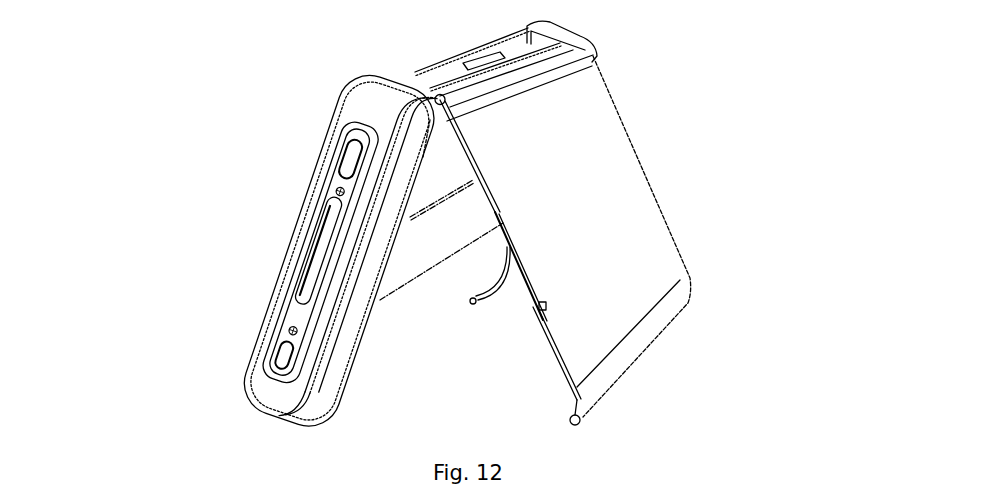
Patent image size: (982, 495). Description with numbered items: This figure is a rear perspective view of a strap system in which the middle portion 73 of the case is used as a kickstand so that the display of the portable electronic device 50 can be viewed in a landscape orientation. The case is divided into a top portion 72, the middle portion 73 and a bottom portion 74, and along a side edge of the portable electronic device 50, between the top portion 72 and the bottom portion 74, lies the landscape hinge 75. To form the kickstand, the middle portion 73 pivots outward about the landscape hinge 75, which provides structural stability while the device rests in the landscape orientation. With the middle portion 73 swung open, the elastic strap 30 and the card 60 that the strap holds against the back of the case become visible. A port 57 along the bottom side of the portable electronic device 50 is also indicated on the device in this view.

The strap 30 is at (425, 247).
The portable electronic device 50 is at (420, 70).
The port 57 is at (327, 247).
The card 60 is at (410, 313).
The top portion 72 is at (573, 33).
The middle portion 73 is at (600, 262).
The bottom portion 74 is at (373, 263).
The landscape hinge 75 is at (517, 72).